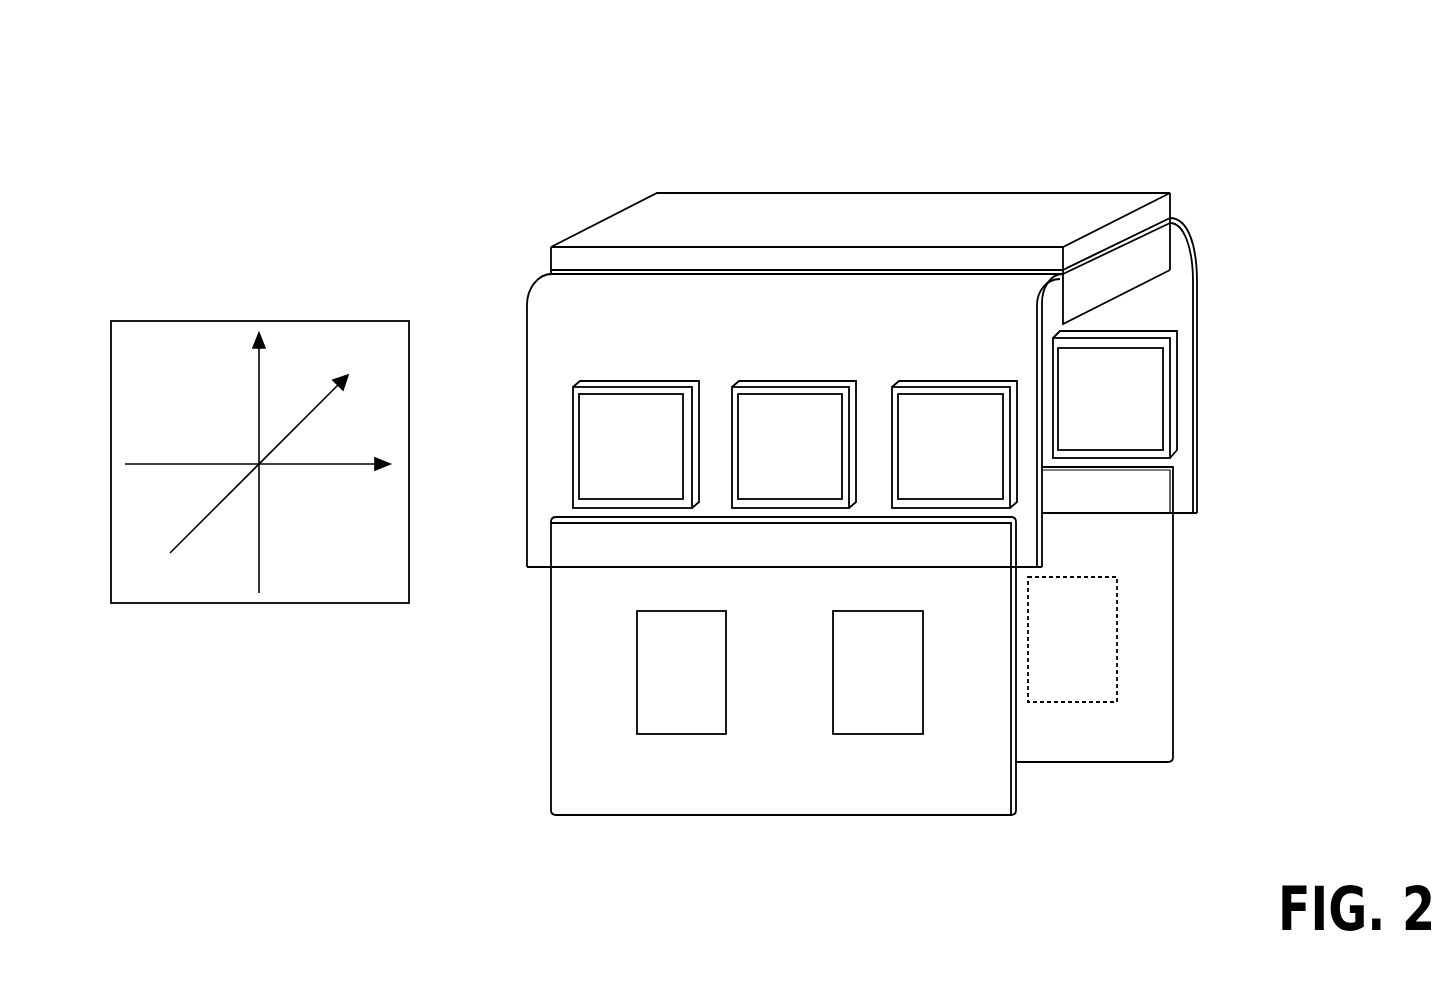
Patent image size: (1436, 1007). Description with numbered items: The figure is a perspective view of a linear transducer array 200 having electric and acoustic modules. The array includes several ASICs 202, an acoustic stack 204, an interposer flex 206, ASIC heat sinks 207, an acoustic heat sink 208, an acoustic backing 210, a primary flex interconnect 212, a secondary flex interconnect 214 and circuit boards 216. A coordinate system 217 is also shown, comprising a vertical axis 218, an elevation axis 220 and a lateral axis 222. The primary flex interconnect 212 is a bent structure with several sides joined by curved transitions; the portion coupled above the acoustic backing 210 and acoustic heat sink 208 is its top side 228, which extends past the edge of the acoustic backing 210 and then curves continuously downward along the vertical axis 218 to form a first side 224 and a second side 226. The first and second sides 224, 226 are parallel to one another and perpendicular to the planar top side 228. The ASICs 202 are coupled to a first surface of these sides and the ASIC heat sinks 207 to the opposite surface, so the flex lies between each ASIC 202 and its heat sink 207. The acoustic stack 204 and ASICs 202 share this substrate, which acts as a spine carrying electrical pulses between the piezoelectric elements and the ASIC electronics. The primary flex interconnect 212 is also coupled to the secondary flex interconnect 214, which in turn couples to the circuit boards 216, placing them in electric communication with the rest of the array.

The transducer array 200 is at (1285, 87).
The ASIC 202 is at (591, 396).
The acoustic stack 204 is at (1172, 193).
The interposer flex 206 is at (1172, 218).
The ASIC heat sink 207 is at (640, 388).
The acoustic heat sink 208 is at (1172, 270).
The acoustic backing 210 is at (1163, 248).
The primary flex interconnect 212 is at (1197, 505).
The secondary flex interconnect 214 is at (1173, 545).
The circuit board 216 is at (677, 734).
The coordinate system 217 is at (160, 303).
The vertical axis 218 is at (259, 372).
The elevation axis 220 is at (207, 513).
The lateral axis 222 is at (337, 466).
The first side 224 is at (528, 303).
The second side 226 is at (1197, 337).
The top side 228 is at (1100, 260).